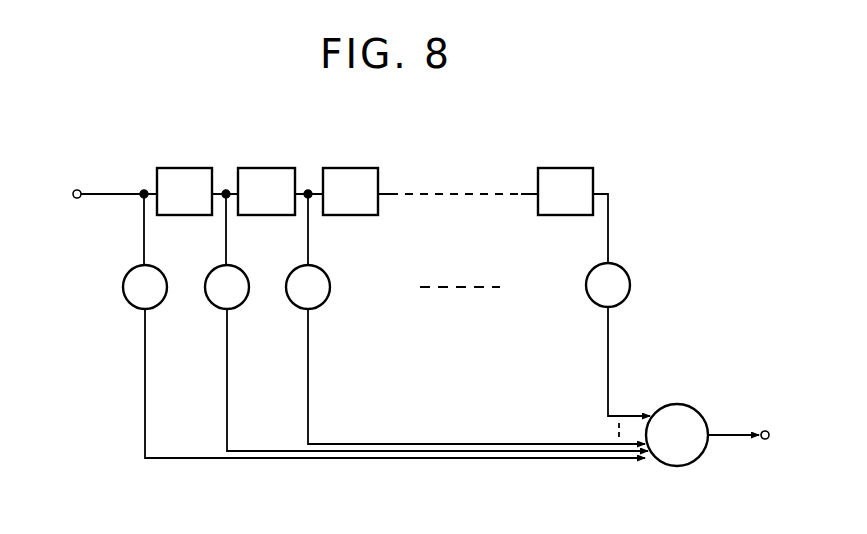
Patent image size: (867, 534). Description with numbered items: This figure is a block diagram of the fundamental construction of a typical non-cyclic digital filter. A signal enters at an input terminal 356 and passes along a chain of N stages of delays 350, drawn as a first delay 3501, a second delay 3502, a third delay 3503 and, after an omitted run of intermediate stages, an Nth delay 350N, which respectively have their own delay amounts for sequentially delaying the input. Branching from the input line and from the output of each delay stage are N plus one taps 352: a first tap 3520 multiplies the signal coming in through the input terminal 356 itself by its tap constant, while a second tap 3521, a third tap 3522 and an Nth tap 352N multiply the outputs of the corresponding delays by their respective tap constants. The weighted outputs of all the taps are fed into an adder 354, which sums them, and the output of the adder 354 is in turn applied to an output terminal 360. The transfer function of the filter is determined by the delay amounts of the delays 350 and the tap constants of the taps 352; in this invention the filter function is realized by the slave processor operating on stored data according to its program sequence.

The input terminal 356 is at (77, 189).
The delays 350 is at (375, 166).
The first delay 3501 is at (185, 167).
The second delay 3502 is at (268, 167).
The third delay 3503 is at (354, 167).
The Nth delay 350N is at (558, 167).
The taps 352 is at (373, 326).
The first tap 3520 is at (129, 272).
The second tap 3521 is at (212, 272).
The third tap 3522 is at (293, 272).
The Nth tap 352N is at (624, 270).
The adder 354 is at (677, 404).
The output terminal 360 is at (764, 439).